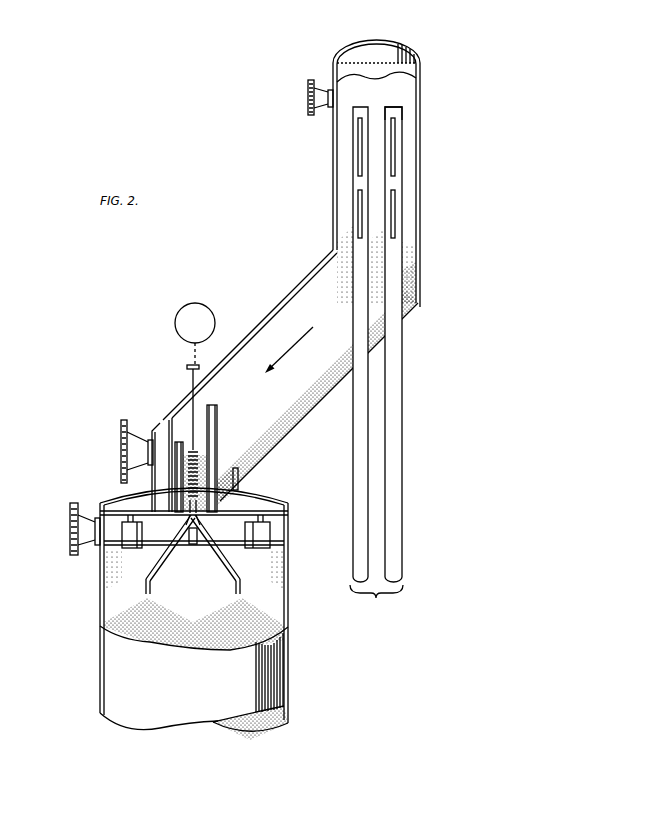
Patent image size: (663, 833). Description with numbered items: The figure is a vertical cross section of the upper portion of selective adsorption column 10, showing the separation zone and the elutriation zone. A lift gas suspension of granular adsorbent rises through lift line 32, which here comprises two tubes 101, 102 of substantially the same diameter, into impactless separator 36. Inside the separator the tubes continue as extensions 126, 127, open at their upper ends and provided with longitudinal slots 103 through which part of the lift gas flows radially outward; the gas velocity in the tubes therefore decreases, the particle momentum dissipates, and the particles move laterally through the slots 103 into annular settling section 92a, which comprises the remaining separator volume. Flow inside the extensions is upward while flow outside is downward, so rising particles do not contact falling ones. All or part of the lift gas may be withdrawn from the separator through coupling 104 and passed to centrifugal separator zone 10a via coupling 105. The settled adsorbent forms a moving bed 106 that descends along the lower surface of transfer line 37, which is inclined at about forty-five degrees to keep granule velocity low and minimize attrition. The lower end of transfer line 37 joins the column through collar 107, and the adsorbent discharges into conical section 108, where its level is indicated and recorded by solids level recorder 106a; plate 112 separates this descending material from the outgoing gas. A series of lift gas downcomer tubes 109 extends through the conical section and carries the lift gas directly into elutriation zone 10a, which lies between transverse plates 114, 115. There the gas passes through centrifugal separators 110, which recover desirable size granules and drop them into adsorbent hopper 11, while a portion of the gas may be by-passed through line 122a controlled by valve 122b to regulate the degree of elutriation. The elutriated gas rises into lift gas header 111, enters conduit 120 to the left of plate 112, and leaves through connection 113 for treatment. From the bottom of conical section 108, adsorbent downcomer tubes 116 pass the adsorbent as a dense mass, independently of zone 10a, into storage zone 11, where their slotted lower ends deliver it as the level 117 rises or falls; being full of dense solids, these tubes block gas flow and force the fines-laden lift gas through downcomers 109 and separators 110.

The selective adsorption column 10 is at (100, 606).
The centrifugal separator zone 10a is at (104, 550).
The adsorbent hopper 11 is at (110, 640).
The lift line 32 is at (376, 602).
The impactless separator 36 is at (410, 76).
The transfer line 37 is at (302, 286).
The settling section 92a is at (410, 234).
The tube 101 is at (360, 482).
The tube 102 is at (395, 526).
The slots 103 is at (396, 202).
The coupling 104 is at (308, 93).
The coupling 105 is at (70, 531).
The moving bed 106 is at (290, 398).
The solids level recorder 106a is at (175, 323).
The collar 107 is at (238, 479).
The conical section 108 is at (238, 488).
The lift gas downcomer tubes 109 is at (213, 426).
The centrifugal separators 110 is at (133, 541).
The lift gas header 111 is at (120, 500).
The plate 112 is at (165, 473).
The connection 113 is at (121, 441).
The transverse plate 114 is at (272, 507).
The transverse plate 115 is at (272, 560).
The adsorbent downcomer tubes 116 is at (238, 590).
The level of adsorbent 117 is at (184, 615).
The conduit 120 is at (163, 428).
The by-pass line 122a is at (190, 556).
The valve 122b is at (200, 556).
The extension 126 is at (358, 107).
The extension 127 is at (398, 108).